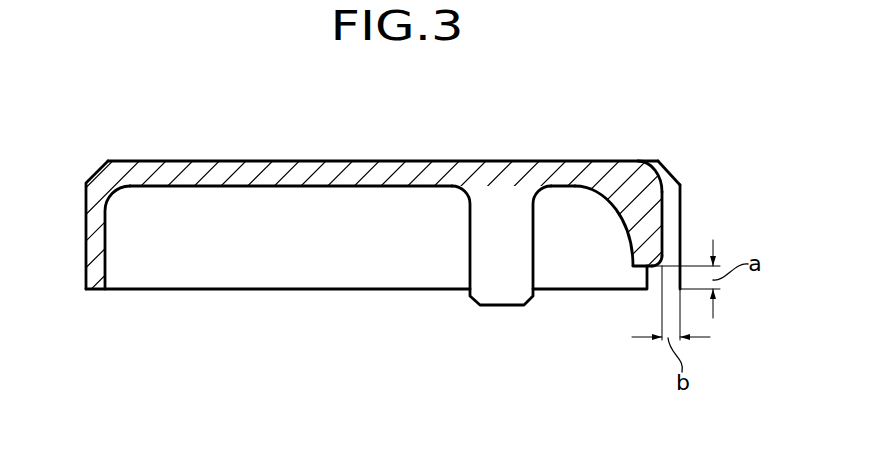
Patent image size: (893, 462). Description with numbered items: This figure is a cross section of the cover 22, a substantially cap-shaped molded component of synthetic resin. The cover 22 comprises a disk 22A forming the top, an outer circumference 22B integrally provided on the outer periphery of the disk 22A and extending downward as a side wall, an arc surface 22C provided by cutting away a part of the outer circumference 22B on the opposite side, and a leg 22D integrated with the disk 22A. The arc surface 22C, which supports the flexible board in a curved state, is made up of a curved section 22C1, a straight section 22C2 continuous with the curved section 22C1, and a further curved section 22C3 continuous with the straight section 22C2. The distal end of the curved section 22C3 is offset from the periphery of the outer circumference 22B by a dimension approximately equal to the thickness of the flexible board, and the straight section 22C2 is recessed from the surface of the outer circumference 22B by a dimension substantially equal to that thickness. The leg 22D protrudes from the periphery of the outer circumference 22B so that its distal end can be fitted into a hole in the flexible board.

The cover 22 is at (428, 127).
The disk 22A is at (273, 166).
The outer circumference 22B is at (88, 243).
The arc surface 22C is at (650, 225).
The curved section 22C1 is at (658, 160).
The straight section 22C2 is at (665, 208).
The curved section 22C3 is at (643, 258).
The leg 22D is at (498, 284).